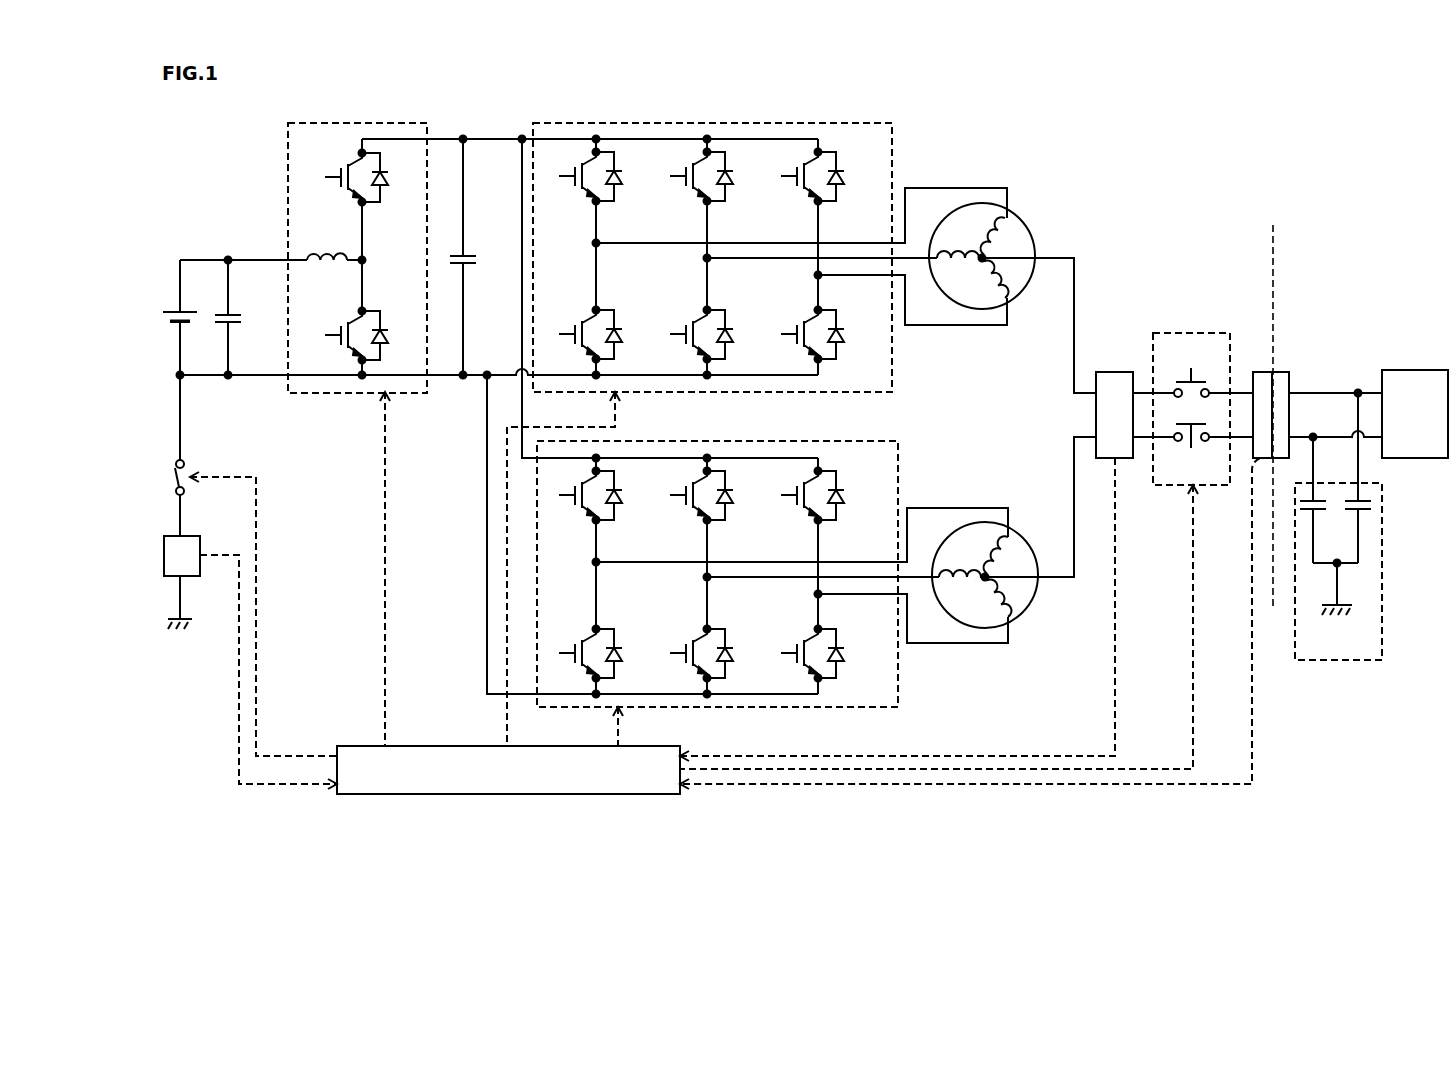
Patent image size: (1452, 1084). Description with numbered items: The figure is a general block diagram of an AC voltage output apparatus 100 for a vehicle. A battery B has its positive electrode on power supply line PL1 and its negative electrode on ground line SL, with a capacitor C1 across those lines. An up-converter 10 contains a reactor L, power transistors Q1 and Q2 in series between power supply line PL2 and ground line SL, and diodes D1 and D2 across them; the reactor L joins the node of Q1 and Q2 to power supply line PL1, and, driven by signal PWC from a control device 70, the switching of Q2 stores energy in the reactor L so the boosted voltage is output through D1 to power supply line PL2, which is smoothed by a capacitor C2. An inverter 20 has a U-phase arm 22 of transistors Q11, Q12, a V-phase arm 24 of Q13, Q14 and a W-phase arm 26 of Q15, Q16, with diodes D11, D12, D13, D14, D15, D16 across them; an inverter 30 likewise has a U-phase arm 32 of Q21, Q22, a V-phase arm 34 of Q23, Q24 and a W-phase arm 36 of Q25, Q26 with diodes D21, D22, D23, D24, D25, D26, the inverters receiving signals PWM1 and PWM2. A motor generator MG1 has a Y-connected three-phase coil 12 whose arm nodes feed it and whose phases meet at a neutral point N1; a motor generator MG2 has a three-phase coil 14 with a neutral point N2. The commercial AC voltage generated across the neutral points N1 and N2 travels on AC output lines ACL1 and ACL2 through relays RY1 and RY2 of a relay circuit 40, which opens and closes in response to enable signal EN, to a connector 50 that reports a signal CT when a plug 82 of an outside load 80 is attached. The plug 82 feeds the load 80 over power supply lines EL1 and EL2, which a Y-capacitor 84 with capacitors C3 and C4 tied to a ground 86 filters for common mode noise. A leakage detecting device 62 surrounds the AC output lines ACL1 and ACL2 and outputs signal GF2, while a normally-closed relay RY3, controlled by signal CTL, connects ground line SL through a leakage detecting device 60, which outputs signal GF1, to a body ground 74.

The AC voltage output apparatus 100 is at (1078, 119).
The up-converter 10 is at (303, 393).
The 3-phase coil 12 is at (990, 228).
The 3-phase coil 14 is at (993, 547).
The inverter 20 is at (795, 392).
The U-phase arm 22 is at (570, 255).
The V-phase arm 24 is at (678, 271).
The W-phase arm 26 is at (788, 286).
The inverter 30 is at (795, 707).
The U-phase arm 32 is at (570, 574).
The V-phase arm 34 is at (680, 591).
The W-phase arm 36 is at (790, 607).
The relay circuit 40 is at (1202, 333).
The connector 50 is at (1262, 372).
The leakage detecting device 60 is at (187, 576).
The leakage detecting device 62 is at (1115, 372).
The control device 70 is at (357, 746).
The body ground 74 is at (182, 639).
The load 80 is at (1406, 370).
The plug 82 is at (1284, 372).
The Y-capacitor 84 is at (1365, 663).
The ground 86 is at (1337, 619).
The battery B is at (186, 312).
The capacitor C1 is at (232, 315).
The capacitor C2 is at (468, 256).
The capacitor C3 is at (1368, 511).
The capacitor C4 is at (1321, 511).
The reactor L is at (327, 245).
The power transistor Q1 is at (342, 187).
The power transistor Q2 is at (342, 326).
The diode D1 is at (385, 177).
The diode D2 is at (385, 335).
The power transistor Q11 is at (576, 186).
The power transistor Q12 is at (576, 325).
The power transistor Q13 is at (687, 186).
The power transistor Q14 is at (687, 325).
The power transistor Q15 is at (798, 186).
The power transistor Q16 is at (798, 325).
The diode D11 is at (622, 176).
The diode D12 is at (622, 334).
The diode D13 is at (733, 176).
The diode D14 is at (733, 334).
The diode D15 is at (844, 176).
The diode D16 is at (844, 334).
The power transistor Q21 is at (576, 505).
The power transistor Q22 is at (576, 644).
The power transistor Q23 is at (687, 505).
The power transistor Q24 is at (687, 644).
The power transistor Q25 is at (798, 505).
The power transistor Q26 is at (798, 644).
The diode D21 is at (622, 495).
The diode D22 is at (622, 653).
The diode D23 is at (733, 495).
The diode D24 is at (733, 653).
The diode D25 is at (844, 495).
The diode D26 is at (844, 653).
The motor generator MG1 is at (1017, 218).
The motor generator MG2 is at (1023, 608).
The neutral point N1 is at (981, 260).
The neutral point N2 is at (984, 579).
The relay RY1 is at (1192, 368).
The relay RY2 is at (1193, 453).
The relay RY3 is at (184, 480).
The power supply line PL1 is at (262, 258).
The power supply line PL2 is at (503, 138).
The ground line SL is at (265, 378).
The AC output line ACL1 is at (1073, 348).
The AC output line ACL2 is at (1073, 473).
The power supply line EL1 is at (1345, 390).
The power supply line EL2 is at (1305, 435).
The signal PWC is at (407, 569).
The signal PWM1 is at (593, 569).
The signal PWM2 is at (647, 726).
The control signal CTL is at (263, 605).
The signal GF1 is at (268, 683).
The signal GF2 is at (897, 609).
The AC output enable signal EN is at (939, 627).
The signal CT is at (970, 633).